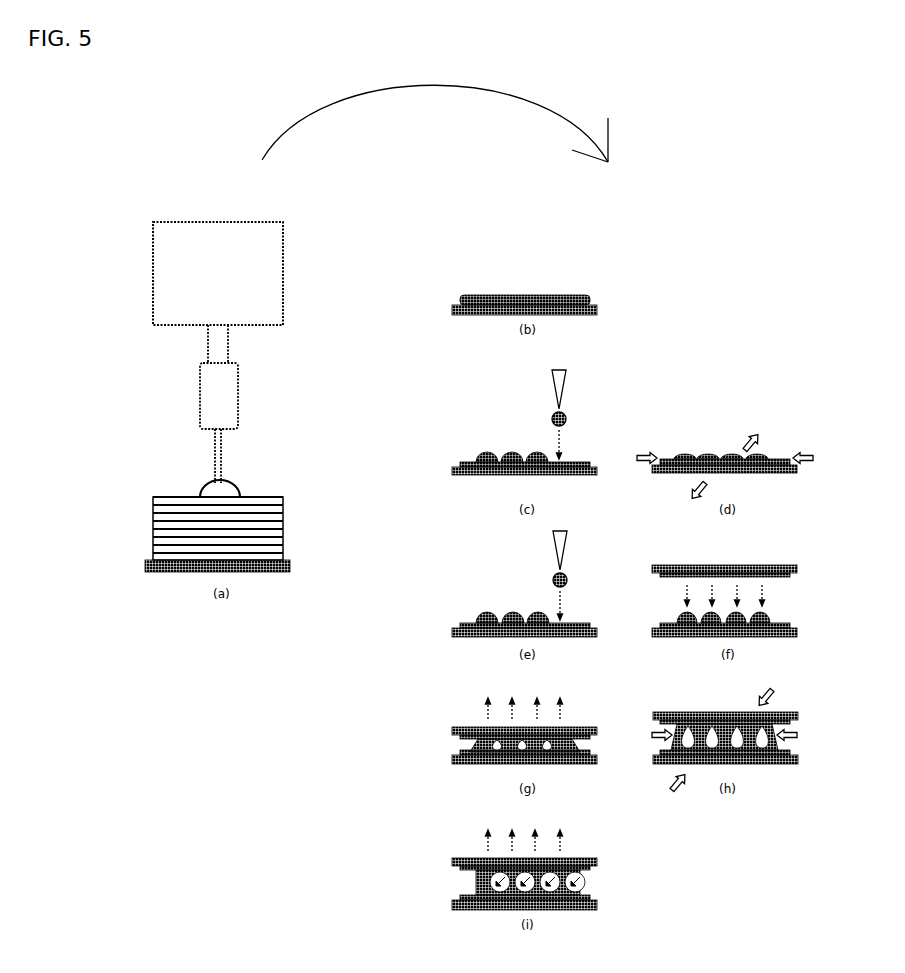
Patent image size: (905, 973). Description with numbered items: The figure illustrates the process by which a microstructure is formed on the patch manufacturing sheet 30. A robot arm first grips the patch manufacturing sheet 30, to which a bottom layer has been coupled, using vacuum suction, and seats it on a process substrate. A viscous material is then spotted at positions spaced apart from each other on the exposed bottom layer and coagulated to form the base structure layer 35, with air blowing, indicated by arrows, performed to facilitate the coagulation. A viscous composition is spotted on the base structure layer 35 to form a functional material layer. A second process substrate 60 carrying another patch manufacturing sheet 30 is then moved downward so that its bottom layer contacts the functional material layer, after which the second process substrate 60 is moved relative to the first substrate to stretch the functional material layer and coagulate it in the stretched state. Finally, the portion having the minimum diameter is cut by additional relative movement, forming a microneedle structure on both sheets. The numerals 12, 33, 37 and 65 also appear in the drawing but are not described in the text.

The bonded body 12 is at (775, 765).
The patch manufacturing sheet 30 is at (153, 505).
The adhesive layer 33 is at (490, 611).
The base structure layer 35 is at (531, 452).
The voids 37 is at (580, 741).
The second process substrate 60 is at (145, 565).
The upper stage 65 is at (797, 568).